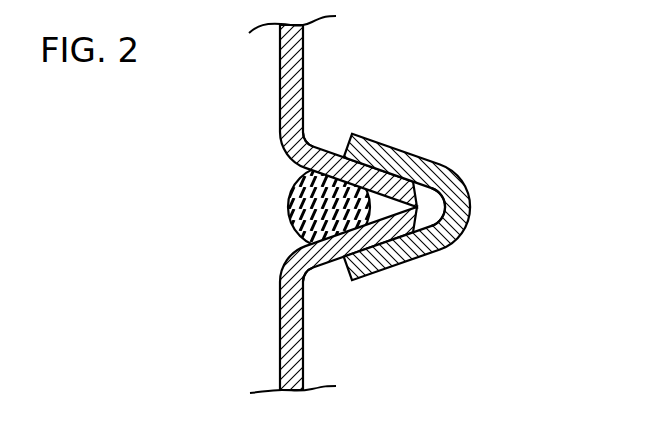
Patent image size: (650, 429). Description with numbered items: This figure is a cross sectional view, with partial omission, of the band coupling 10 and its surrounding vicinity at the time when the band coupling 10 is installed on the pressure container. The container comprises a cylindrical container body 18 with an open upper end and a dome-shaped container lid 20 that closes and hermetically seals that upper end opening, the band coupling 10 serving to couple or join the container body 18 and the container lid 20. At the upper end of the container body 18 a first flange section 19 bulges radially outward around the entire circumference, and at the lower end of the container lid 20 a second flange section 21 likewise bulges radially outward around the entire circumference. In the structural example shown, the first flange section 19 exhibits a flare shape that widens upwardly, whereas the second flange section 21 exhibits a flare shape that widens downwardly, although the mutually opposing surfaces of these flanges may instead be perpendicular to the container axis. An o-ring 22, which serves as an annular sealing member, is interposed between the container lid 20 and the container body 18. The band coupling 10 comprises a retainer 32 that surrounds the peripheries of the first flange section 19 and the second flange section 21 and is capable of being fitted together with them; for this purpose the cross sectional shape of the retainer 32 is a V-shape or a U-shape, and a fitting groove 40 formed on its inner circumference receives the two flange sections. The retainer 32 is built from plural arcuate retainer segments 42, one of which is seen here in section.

The band coupling 10 is at (426, 230).
The fitting groove 40 is at (409, 154).
The retainer 32 is at (414, 269).
The retainer segment 42 is at (421, 212).
The container lid 20 is at (323, 111).
The second flange section 21 is at (327, 152).
The o-ring 22 is at (316, 208).
The first flange section 19 is at (324, 262).
The container body 18 is at (323, 300).